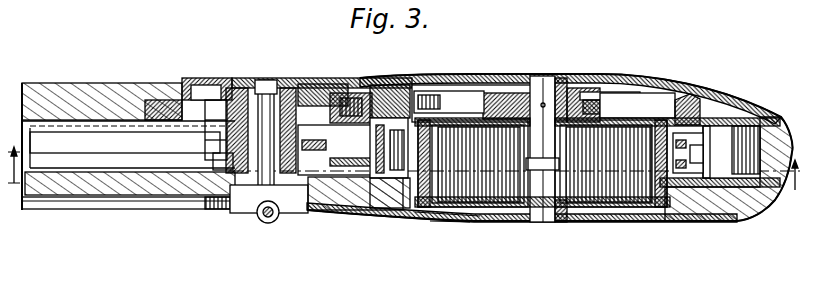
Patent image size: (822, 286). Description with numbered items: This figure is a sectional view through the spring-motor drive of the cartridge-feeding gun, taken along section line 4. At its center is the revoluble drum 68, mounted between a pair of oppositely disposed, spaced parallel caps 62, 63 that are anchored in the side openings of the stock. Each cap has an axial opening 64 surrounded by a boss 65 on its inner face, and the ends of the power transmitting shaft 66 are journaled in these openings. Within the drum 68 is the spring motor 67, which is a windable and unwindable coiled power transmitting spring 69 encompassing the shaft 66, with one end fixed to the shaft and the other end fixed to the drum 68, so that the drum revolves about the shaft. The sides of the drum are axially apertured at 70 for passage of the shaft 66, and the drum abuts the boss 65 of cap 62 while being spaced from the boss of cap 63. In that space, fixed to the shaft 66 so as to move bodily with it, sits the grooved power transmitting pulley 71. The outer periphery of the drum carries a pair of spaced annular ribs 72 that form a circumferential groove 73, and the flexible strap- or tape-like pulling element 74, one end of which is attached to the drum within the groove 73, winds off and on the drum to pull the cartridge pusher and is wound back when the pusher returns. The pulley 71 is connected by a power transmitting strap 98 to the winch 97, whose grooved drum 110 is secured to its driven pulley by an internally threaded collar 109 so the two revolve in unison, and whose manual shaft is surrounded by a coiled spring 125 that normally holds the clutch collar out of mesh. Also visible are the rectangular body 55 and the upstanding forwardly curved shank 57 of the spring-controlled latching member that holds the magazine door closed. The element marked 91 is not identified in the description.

The section line 4- 4 is at (403, 175).
The barrel casing 91 is at (103, 67).
The flexible pulling element 74 is at (78, 143).
The grooved drum 110 is at (312, 142).
The winch 97 is at (210, 84).
The shank 57 is at (229, 92).
The coiled spring 125 is at (257, 163).
The rectangular body 55 is at (304, 90).
The internally threaded collar 109 is at (336, 92).
The power transmitting strap 98 is at (432, 96).
The cap 63 is at (490, 98).
The boss 65 is at (527, 90).
The axial opening 64 is at (560, 90).
The axial aperture 70 is at (567, 92).
The grooved power transmitting pulley 71 is at (582, 97).
The revoluble drum 68 is at (628, 118).
The spring motor 67 is at (652, 118).
The coiled power transmitting spring 69 is at (662, 212).
The cap 62 is at (500, 222).
The power transmitting shaft 66 is at (576, 216).
The annular rib 72 is at (436, 212).
The circumferential groove 73 is at (446, 223).